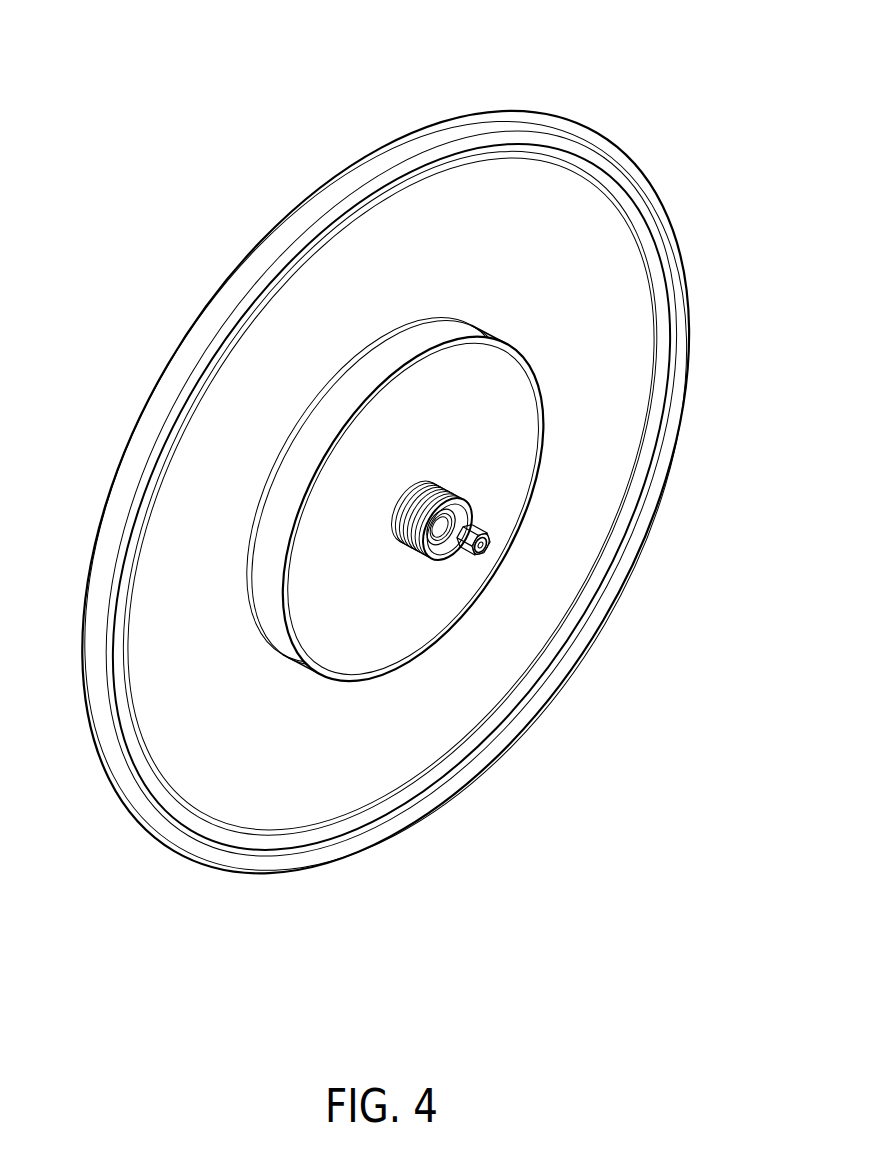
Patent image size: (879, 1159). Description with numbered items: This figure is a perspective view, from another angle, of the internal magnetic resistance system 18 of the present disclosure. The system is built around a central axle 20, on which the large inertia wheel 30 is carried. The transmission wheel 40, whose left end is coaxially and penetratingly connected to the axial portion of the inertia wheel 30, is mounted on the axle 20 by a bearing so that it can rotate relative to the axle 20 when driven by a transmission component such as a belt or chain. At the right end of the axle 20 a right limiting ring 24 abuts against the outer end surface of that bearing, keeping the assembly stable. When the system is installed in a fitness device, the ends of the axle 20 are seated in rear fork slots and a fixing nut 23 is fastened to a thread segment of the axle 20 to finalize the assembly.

The internal magnetic resistance system 18 is at (407, 492).
The inertia wheel 30 is at (439, 222).
The transmission wheel 40 is at (450, 488).
The fixing nut 23 is at (482, 527).
The axle 20 is at (485, 551).
The right limiting ring 24 is at (447, 553).